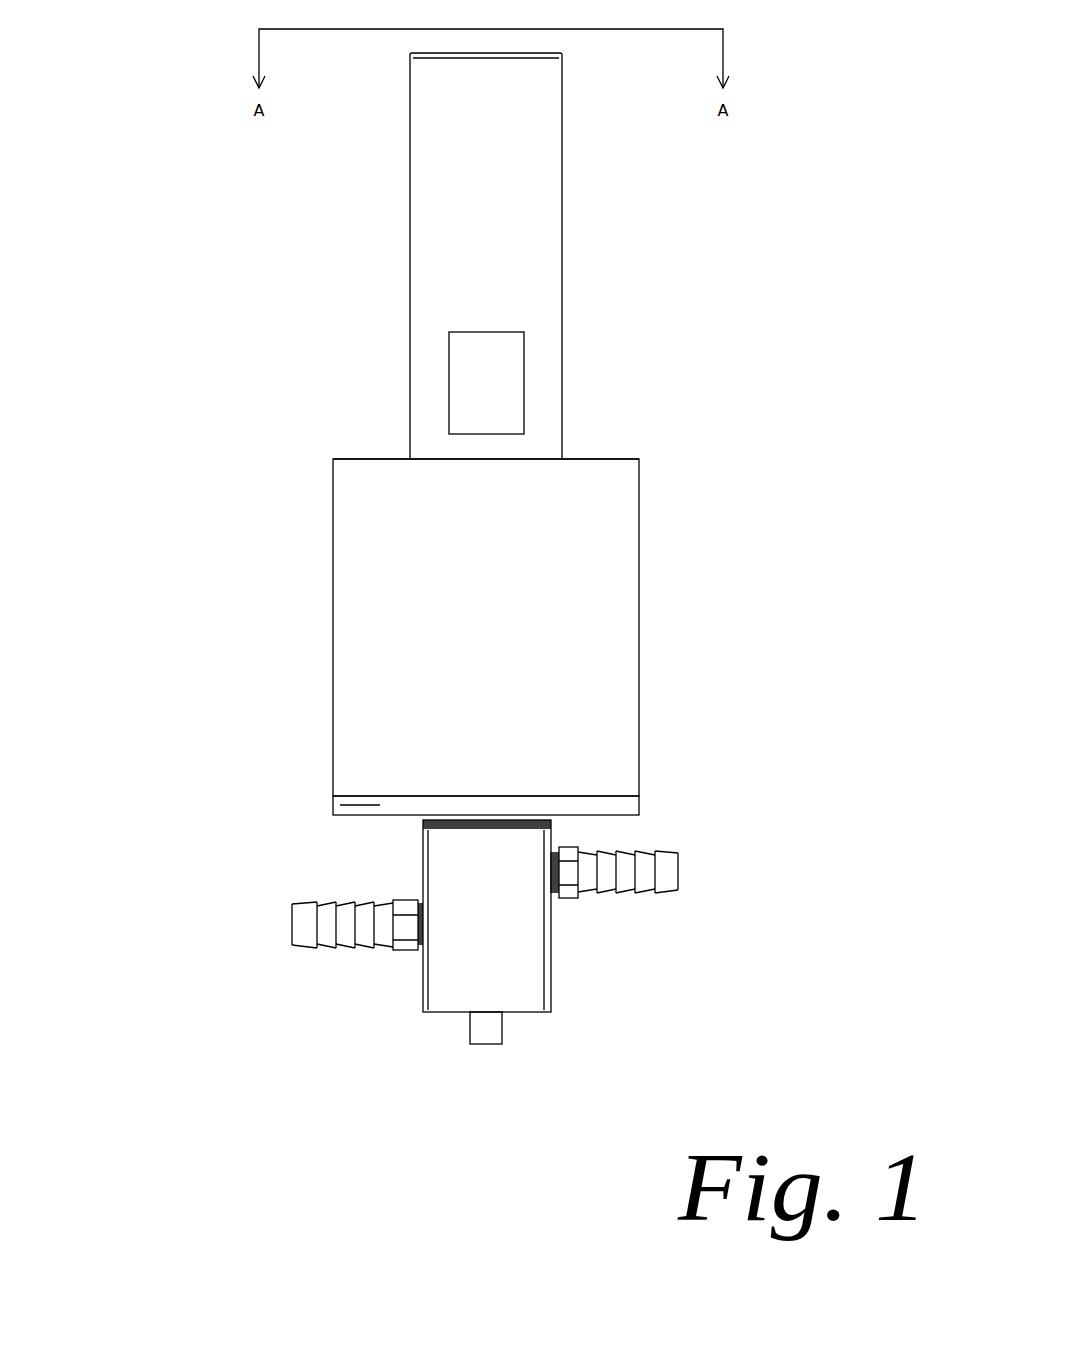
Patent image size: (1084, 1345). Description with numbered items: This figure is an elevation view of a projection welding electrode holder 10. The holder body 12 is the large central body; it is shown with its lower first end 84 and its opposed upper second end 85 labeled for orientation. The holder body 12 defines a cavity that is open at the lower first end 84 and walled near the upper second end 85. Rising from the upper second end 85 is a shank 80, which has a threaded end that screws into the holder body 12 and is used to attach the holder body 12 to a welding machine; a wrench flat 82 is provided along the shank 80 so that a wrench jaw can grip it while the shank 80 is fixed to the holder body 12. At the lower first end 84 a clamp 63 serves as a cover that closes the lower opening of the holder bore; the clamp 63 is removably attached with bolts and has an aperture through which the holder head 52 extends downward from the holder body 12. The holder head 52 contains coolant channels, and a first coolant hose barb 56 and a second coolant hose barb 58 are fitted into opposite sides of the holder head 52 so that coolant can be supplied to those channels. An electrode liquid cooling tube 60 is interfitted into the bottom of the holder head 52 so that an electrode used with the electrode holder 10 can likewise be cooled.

The electrode holder 10 is at (157, 57).
The holder body 12 is at (556, 647).
The holder head 52 is at (462, 943).
The first coolant hose barb 56 is at (671, 867).
The second coolant hose barb 58 is at (303, 922).
The electrode liquid cooling tube 60 is at (485, 1025).
The clamp 63 is at (363, 805).
The shank 80 is at (523, 243).
The wrench flat 82 is at (486, 377).
The lower first end 84 is at (395, 793).
The upper second end 85 is at (382, 455).